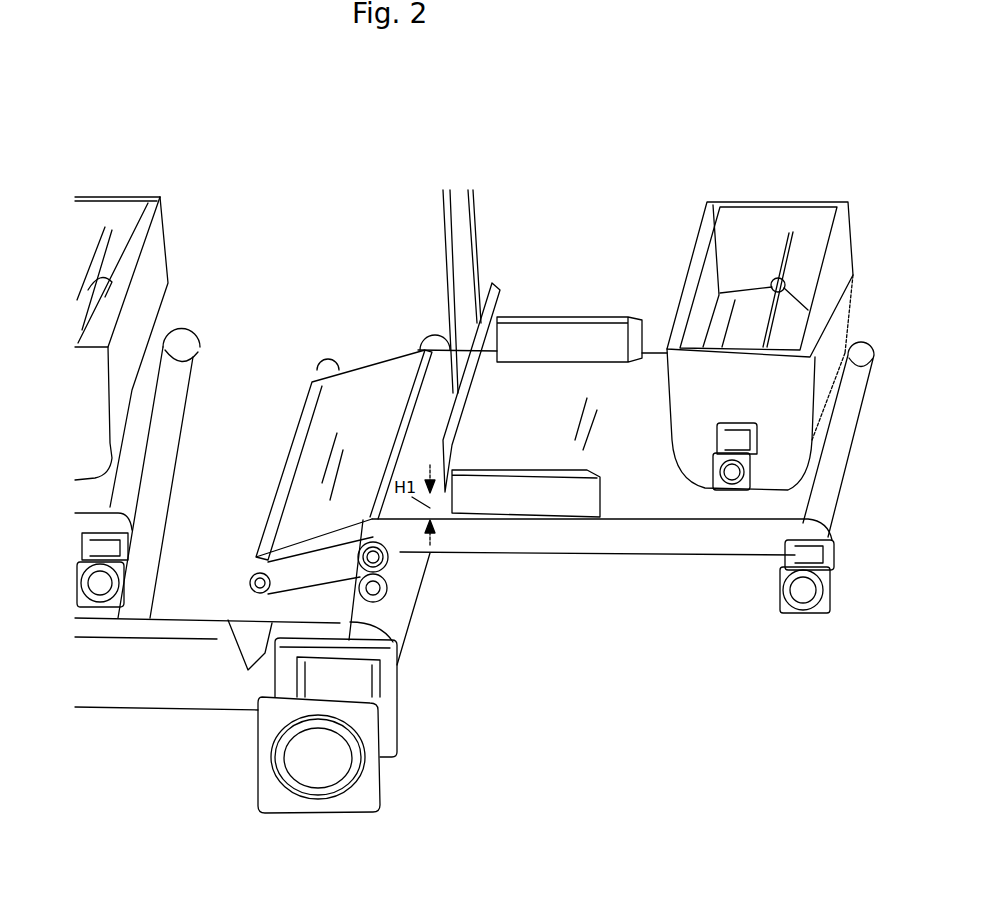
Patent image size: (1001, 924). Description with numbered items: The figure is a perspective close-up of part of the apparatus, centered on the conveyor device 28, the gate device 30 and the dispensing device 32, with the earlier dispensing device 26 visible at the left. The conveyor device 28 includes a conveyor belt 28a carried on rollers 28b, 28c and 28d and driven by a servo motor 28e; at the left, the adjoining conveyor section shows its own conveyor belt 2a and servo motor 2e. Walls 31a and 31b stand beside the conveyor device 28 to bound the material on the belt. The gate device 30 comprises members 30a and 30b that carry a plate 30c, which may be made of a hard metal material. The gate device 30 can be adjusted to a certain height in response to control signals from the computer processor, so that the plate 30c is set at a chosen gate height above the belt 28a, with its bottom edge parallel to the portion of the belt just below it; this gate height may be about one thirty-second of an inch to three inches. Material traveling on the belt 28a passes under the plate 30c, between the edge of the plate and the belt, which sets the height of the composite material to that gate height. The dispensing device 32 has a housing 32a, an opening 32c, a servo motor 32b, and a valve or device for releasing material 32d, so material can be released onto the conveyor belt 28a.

The conveyor belt 2a is at (188, 568).
The servo motor 2e is at (313, 763).
The dispensing device 26 is at (122, 218).
The conveyor device 28 is at (562, 495).
The conveyor belt 28a is at (348, 420).
The roller 28b is at (270, 593).
The roller 28c is at (380, 562).
The roller 28d is at (378, 590).
The servo motor 28e is at (803, 590).
The gate device 30 is at (445, 337).
The member 30a is at (450, 315).
The member 30b is at (477, 268).
The plate 30c is at (473, 393).
The wall 31a is at (577, 488).
The wall 31b is at (542, 337).
The dispensing device 32 is at (794, 318).
The housing 32a is at (842, 280).
The servo motor 32b is at (732, 472).
The opening 32c is at (808, 230).
The valve or device for releasing material 32d is at (760, 307).